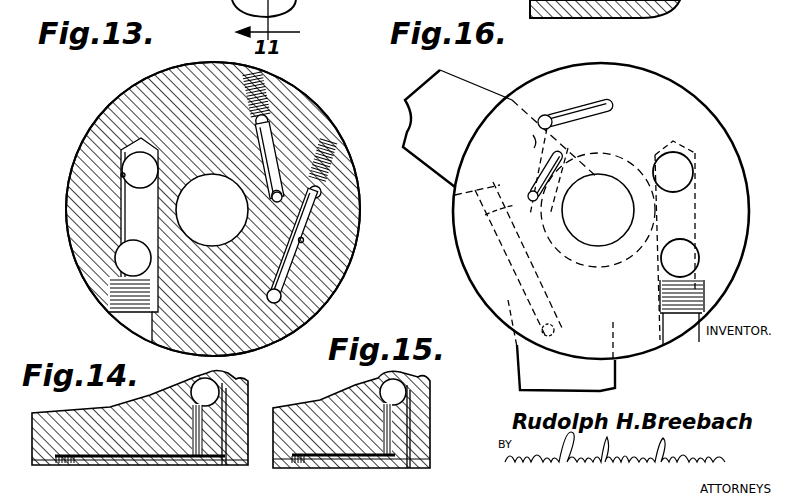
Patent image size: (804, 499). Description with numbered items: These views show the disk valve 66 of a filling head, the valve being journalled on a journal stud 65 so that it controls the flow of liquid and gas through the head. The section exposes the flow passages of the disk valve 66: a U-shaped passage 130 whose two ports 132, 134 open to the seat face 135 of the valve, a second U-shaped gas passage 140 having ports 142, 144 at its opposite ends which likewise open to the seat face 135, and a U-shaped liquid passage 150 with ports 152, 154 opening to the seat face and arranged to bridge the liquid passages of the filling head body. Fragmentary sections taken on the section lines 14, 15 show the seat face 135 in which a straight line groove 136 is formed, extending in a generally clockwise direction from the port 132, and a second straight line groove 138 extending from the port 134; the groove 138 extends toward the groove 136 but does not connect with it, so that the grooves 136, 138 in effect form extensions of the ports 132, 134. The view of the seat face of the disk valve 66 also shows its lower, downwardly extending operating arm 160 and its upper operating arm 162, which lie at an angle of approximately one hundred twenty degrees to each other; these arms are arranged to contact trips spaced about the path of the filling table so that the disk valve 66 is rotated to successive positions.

In FIG. 13, the section line 14— 14 is at (240, 110).
In FIG. 13, the section line 15— 15 is at (254, 137).
In FIG. 16, the journal stud 65 is at (590, 250).
In FIG. 13, the disk valve 66 is at (285, 108).
In FIG. 14, the disk valve 66 is at (46, 455).
In FIG. 15, the disk valve 66 is at (310, 410).
In FIG. 16, the disk valve 66 is at (664, 79).
In FIG. 13, the passage 130 is at (322, 152).
In FIG. 14, the passage 130 is at (218, 382).
In FIG. 15, the passage 130 is at (404, 390).
In FIG. 16, the passage 130 is at (532, 138).
In FIG. 13, the port 132 is at (273, 119).
In FIG. 14, the port 132 is at (207, 455).
In FIG. 16, the port 132 is at (546, 116).
In FIG. 13, the port 134 is at (291, 186).
In FIG. 15, the port 134 is at (402, 445).
In FIG. 16, the port 134 is at (527, 192).
In FIG. 14, the seat face 135 is at (84, 462).
In FIG. 15, the seat face 135 is at (288, 462).
In FIG. 16, the seat face 135 is at (670, 125).
In FIG. 13, the straight line groove 136 is at (269, 161).
In FIG. 14, the straight line groove 136 is at (143, 460).
In FIG. 15, the straight line groove 136 is at (342, 460).
In FIG. 16, the straight line groove 136 is at (580, 102).
In FIG. 13, the straight line groove 138 is at (212, 210).
In FIG. 16, the straight line groove 138 is at (570, 160).
In FIG. 13, the gas passage 140 is at (303, 240).
In FIG. 16, the gas passage 140 is at (515, 268).
In FIG. 13, the port 142 is at (323, 197).
In FIG. 16, the port 142 is at (480, 204).
In FIG. 13, the port 144 is at (281, 296).
In FIG. 16, the port 144 is at (545, 322).
In FIG. 13, the liquid passage 150 is at (137, 217).
In FIG. 16, the liquid passage 150 is at (697, 212).
In FIG. 13, the port 152 is at (121, 175).
In FIG. 16, the port 152 is at (690, 176).
In FIG. 13, the port 154 is at (118, 263).
In FIG. 16, the port 154 is at (700, 258).
In FIG. 16, the lower operating arm 160 is at (615, 378).
In FIG. 16, the upper operating arm 162 is at (450, 88).